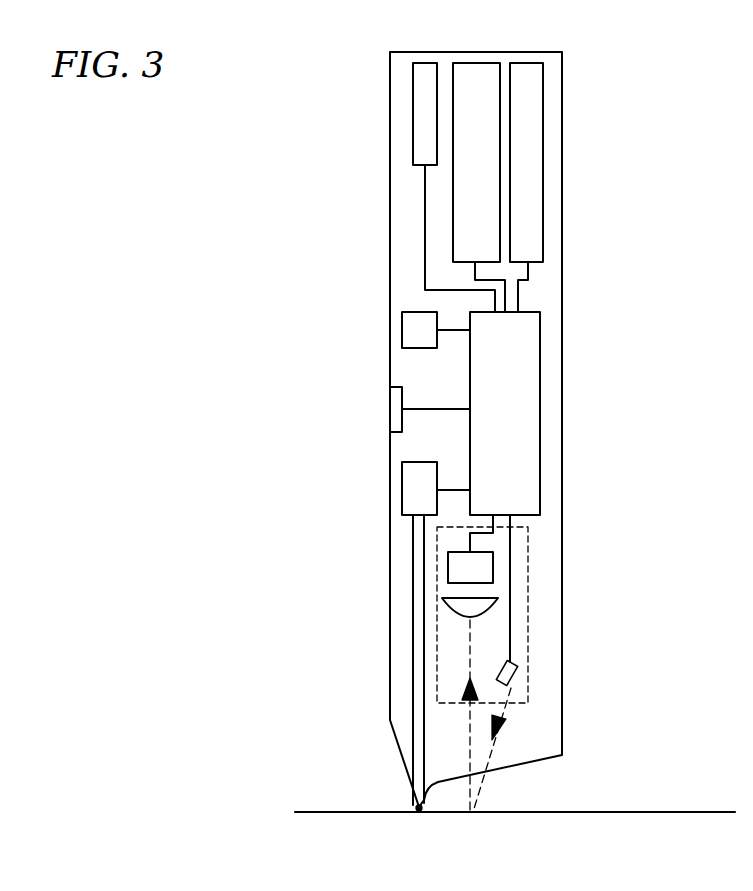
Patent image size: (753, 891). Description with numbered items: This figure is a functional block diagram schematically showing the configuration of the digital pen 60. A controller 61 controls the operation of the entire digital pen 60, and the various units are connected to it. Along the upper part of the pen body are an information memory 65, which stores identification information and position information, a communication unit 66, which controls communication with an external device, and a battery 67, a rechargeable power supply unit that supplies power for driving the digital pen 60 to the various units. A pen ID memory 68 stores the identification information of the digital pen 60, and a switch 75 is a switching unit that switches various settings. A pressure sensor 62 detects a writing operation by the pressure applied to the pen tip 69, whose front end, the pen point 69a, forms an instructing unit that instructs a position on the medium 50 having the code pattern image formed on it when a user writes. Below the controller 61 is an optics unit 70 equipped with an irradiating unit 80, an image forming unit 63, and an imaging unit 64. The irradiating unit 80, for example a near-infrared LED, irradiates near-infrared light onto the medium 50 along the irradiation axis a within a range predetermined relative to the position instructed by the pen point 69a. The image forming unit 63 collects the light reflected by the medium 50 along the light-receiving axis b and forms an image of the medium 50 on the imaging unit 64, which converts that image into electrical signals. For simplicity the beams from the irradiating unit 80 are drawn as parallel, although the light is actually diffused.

The digital pen 60 is at (322, 91).
The information memory 65 is at (472, 72).
The communication unit 66 is at (418, 130).
The battery 67 is at (535, 127).
The pen ID memory 68 is at (407, 325).
The controller 61 is at (520, 376).
The switch 75 is at (395, 405).
The pressure sensor 62 is at (407, 483).
The optics unit 70 is at (528, 546).
The imaging unit 64 is at (482, 563).
The image forming unit 63 is at (487, 605).
The irradiating unit 80 is at (514, 661).
The pen tip 69 is at (413, 758).
The pen point 69a is at (415, 807).
The medium 50 is at (601, 812).
The irradiation axis a is at (480, 782).
The light-receiving axis b is at (467, 758).